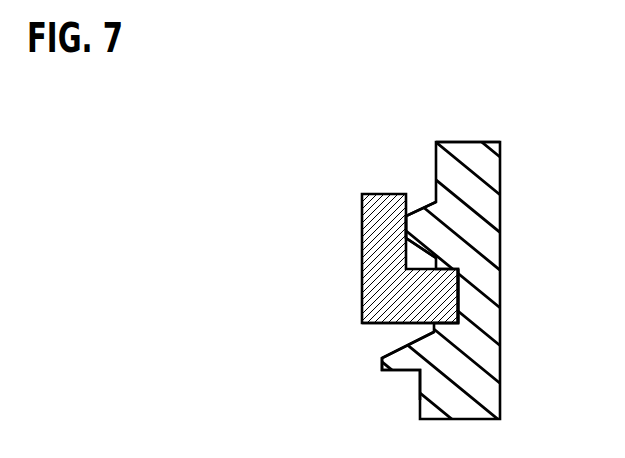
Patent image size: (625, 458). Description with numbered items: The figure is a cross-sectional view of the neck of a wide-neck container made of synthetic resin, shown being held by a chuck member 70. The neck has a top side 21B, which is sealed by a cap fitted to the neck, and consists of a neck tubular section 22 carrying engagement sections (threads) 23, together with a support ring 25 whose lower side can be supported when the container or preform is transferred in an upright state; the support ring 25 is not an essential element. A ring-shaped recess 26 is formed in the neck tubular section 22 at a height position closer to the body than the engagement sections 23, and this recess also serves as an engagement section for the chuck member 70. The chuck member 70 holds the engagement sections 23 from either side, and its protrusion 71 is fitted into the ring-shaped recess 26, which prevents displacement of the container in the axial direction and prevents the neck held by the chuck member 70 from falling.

The top side 21B is at (465, 141).
The neck tubular section 22 is at (502, 212).
The engagement sections (threads) 23 is at (422, 218).
The support ring 25 is at (408, 370).
The ring-shaped recess 26 is at (460, 297).
The chuck member 70 is at (368, 239).
The protrusion 71 is at (393, 300).